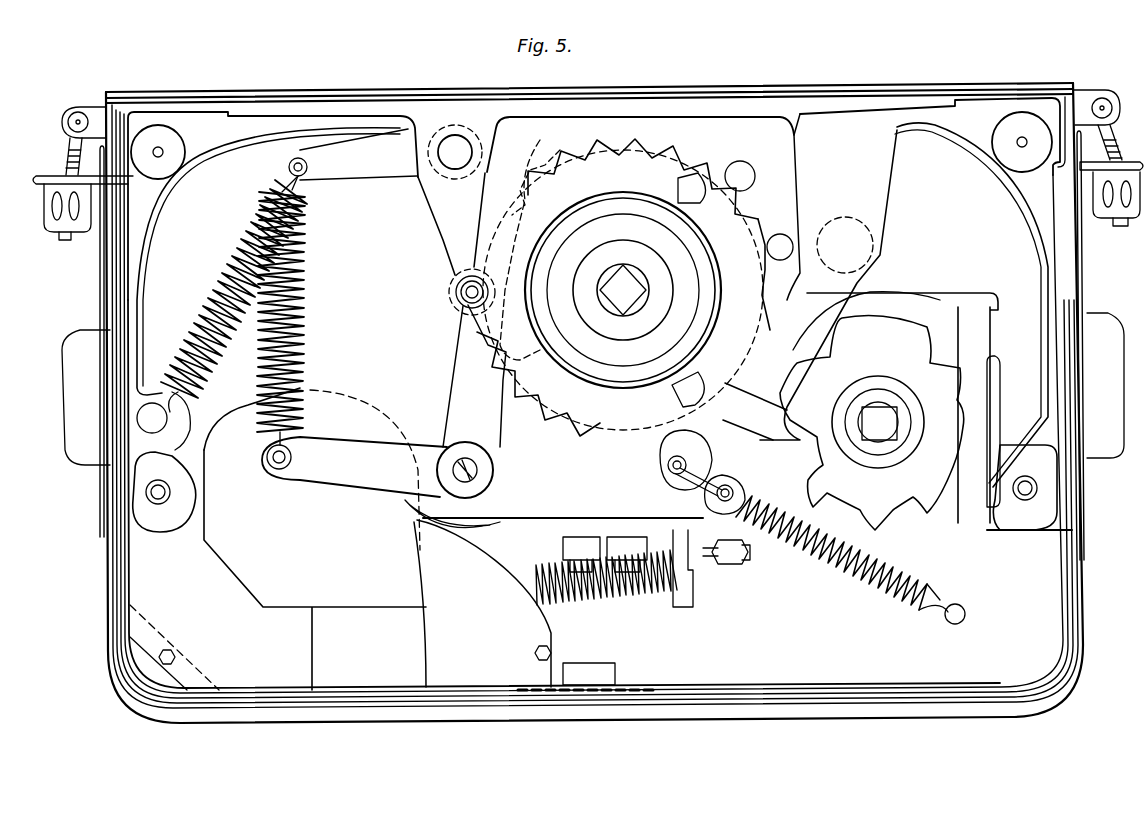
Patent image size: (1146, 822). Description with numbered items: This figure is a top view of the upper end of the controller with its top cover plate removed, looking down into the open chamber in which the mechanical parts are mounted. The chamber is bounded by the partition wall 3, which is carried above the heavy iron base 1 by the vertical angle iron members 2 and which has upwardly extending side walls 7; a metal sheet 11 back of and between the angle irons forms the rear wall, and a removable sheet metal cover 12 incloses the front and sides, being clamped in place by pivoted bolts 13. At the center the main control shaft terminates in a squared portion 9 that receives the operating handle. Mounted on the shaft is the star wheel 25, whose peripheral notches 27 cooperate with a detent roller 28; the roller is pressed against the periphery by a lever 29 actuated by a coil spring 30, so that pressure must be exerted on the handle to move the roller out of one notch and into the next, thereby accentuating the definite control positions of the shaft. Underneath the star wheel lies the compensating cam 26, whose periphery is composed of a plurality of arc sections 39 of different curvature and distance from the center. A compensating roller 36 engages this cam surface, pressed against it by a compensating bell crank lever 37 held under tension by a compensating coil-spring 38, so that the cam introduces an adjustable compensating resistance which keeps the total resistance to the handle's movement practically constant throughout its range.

The base 1 is at (314, 719).
The angle iron members 2 is at (110, 106).
The partition wall 3 is at (364, 383).
The side walls 7 is at (292, 114).
The squared portion 9 is at (623, 290).
The metal sheet 11 is at (172, 92).
The sheet metal cover 12 is at (115, 605).
The pivoted bolts 13 is at (70, 139).
The star wheel 25 is at (645, 150).
The compensating cam 26 is at (513, 185).
The notches 27 is at (620, 135).
The detent roller 28 is at (458, 296).
The lever 29 is at (450, 207).
The coil spring 30 is at (240, 268).
The compensating roller 36 is at (507, 328).
The compensating bell crank lever 37 is at (472, 378).
The compensating coil-spring 38 is at (262, 386).
The arc sections 39 is at (525, 195).